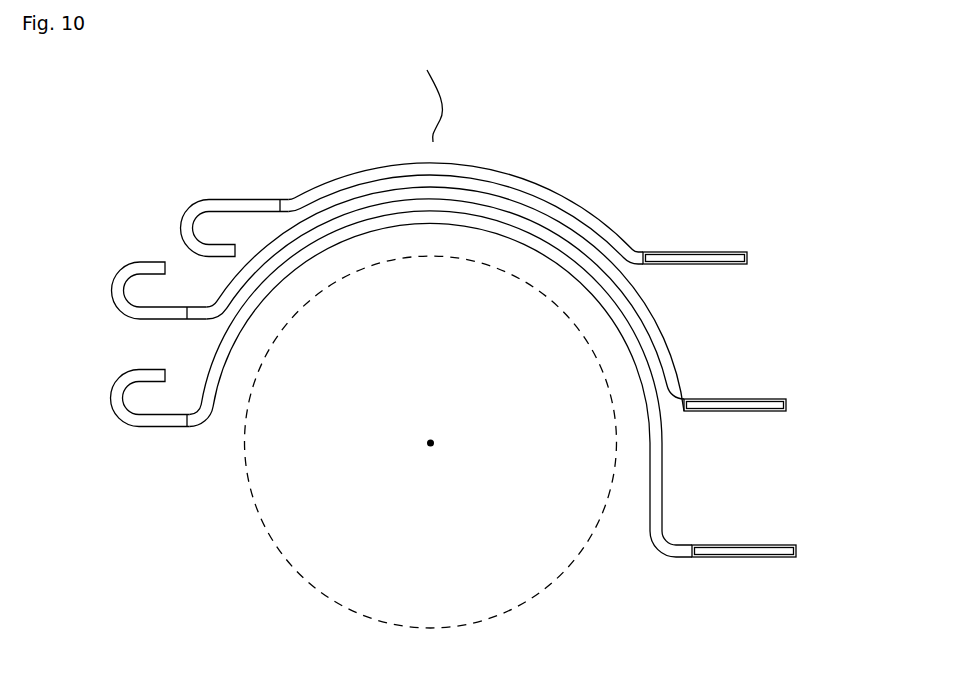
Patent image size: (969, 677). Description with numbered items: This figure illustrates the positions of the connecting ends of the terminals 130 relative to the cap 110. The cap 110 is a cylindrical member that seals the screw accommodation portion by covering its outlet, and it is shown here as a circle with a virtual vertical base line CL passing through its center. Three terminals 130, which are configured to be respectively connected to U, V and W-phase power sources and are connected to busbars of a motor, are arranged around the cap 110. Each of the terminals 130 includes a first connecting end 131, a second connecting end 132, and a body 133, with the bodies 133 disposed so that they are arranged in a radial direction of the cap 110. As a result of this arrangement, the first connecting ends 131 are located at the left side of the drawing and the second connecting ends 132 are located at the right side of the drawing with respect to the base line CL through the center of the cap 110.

The cap 110 is at (250, 492).
The terminals 130 is at (528, 124).
The first connecting ends 131 is at (182, 213).
The second connecting ends 132 is at (748, 257).
The bodies 133 is at (382, 223).